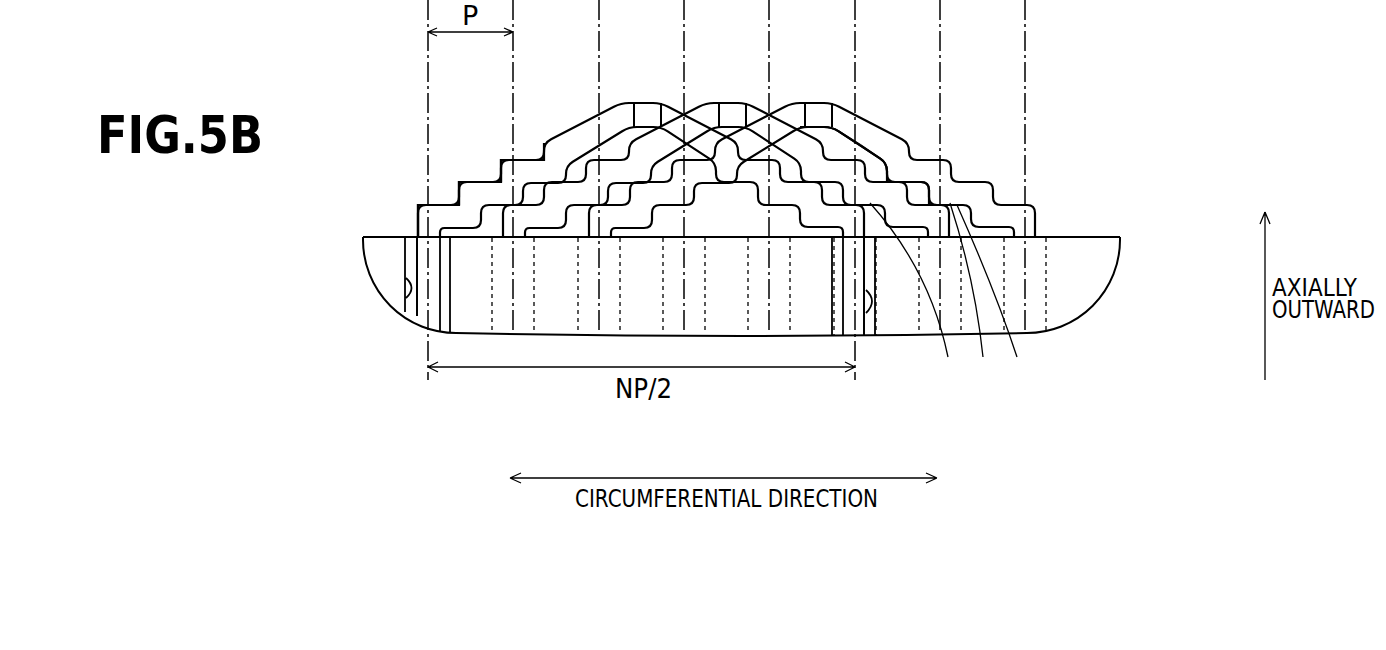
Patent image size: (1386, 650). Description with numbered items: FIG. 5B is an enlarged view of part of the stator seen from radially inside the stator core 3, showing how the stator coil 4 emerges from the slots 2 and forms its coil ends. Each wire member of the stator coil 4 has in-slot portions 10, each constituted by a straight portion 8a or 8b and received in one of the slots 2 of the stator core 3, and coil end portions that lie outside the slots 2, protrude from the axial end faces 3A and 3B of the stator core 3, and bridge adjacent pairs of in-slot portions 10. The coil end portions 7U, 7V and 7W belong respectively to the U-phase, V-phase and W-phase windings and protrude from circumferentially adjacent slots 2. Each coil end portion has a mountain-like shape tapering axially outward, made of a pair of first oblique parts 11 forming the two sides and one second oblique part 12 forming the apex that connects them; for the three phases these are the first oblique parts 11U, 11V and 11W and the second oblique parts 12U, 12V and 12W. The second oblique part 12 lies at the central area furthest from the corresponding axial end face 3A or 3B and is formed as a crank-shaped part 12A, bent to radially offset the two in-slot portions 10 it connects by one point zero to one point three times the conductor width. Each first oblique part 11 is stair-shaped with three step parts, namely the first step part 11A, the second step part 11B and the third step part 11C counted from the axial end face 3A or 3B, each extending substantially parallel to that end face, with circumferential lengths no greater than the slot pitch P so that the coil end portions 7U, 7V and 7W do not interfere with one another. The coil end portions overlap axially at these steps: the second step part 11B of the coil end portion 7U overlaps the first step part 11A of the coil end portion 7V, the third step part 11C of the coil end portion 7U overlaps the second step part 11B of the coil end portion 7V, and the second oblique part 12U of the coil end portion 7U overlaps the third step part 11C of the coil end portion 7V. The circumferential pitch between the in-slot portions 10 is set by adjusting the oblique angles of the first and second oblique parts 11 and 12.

The slot 2 is at (401, 305).
The stator core 3 is at (1085, 310).
The axial end face 3A is at (1077, 238).
The axial end face 3B is at (794, 210).
The stator coil 4 is at (1048, 391).
The coil end portion of U-phase winding 7U is at (916, 297).
The coil end portion of V-phase winding 7V is at (976, 297).
The coil end portion of W-phase winding 7W is at (1001, 298).
The straight portion 8a is at (441, 336).
The straight portion 8b is at (897, 337).
The in-slot portion 10 is at (423, 303).
The first oblique part 11 is at (538, 94).
The first step part 11A is at (440, 216).
The second step part 11B is at (485, 194).
The third step part 11C is at (530, 174).
The first oblique part of U-phase coil end portion 11U is at (838, 126).
The first oblique part of V-phase coil end portion 11V is at (885, 157).
The first oblique part of W-phase coil end portion 11W is at (932, 178).
The second oblique part 12 is at (578, 128).
The second oblique part of U-phase coil end portion 12U is at (641, 134).
The crank-shaped part 12A is at (648, 110).
The second oblique part of V-phase coil end portion 12V is at (757, 108).
The second oblique part of W-phase coil end portion 12W is at (846, 110).